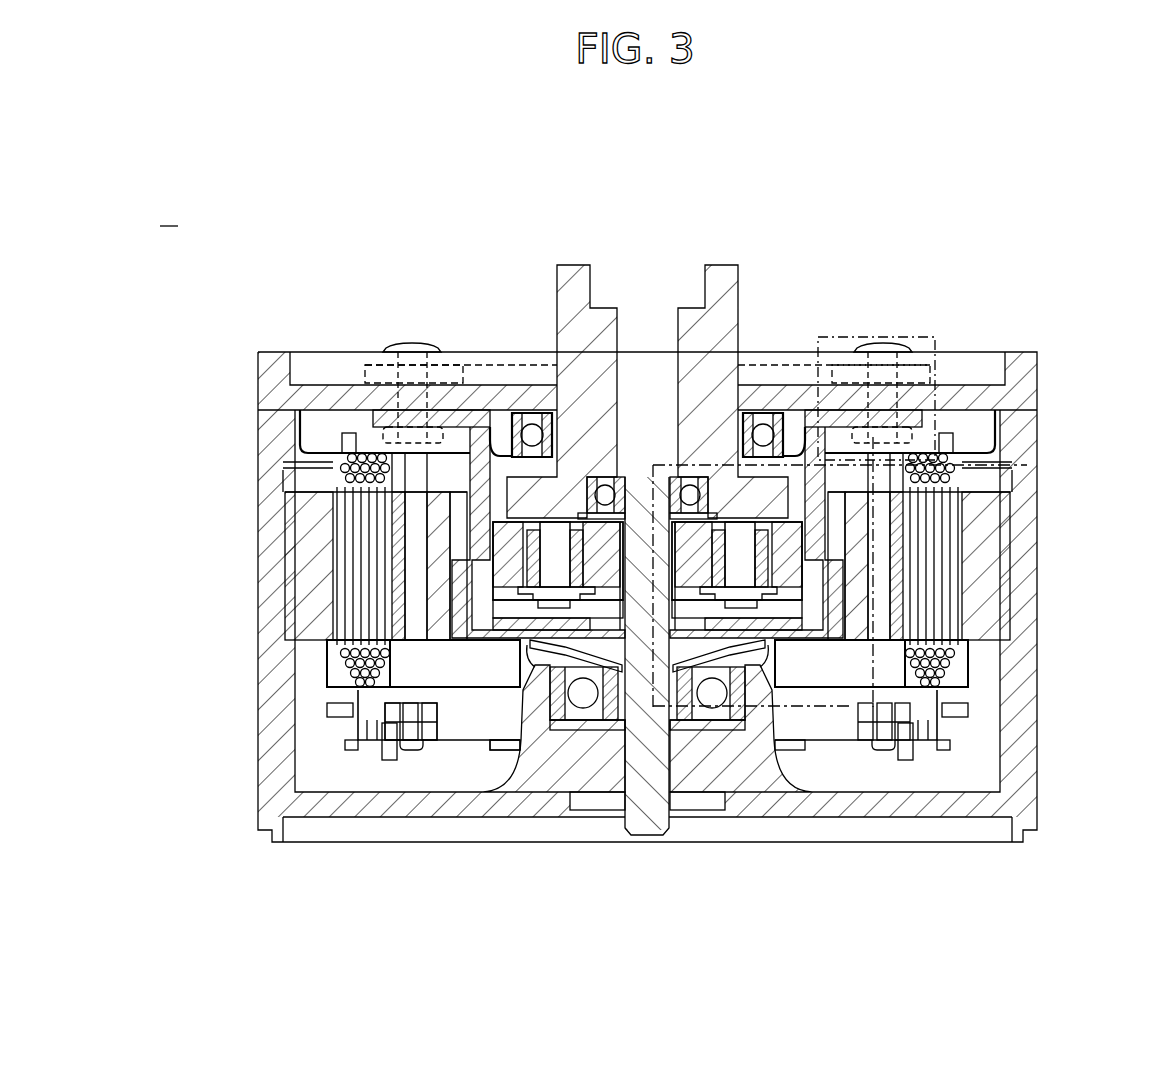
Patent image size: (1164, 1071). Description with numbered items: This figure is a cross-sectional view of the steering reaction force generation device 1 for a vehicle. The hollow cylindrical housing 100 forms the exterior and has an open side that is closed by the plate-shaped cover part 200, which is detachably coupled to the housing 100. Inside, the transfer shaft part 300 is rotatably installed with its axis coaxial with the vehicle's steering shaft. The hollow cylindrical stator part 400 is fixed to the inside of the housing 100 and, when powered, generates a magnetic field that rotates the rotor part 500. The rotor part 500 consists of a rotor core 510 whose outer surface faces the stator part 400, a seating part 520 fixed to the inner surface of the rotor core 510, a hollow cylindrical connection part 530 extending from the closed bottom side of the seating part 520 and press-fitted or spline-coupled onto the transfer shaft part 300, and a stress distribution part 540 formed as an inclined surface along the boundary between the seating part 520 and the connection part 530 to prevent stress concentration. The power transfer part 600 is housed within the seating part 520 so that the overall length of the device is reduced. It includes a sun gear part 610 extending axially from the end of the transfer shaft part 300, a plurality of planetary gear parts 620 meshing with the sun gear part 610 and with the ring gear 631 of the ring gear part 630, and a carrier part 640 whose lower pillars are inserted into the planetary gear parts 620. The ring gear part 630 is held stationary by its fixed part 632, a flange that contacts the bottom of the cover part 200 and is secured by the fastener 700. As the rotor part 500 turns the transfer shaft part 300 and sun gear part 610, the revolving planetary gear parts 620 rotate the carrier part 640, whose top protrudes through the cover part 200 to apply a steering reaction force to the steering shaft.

The steering reaction force generation device 1 is at (169, 213).
The housing 100 is at (1018, 702).
The cover part 200 is at (960, 395).
The transfer shaft part 300 is at (648, 797).
The stator part 400 is at (355, 555).
The rotor part 500 is at (647, 797).
The rotor core 510 is at (417, 645).
The seating part 520 is at (483, 648).
The connection part 530 is at (647, 763).
The stress distribution part 540 is at (528, 650).
The power transfer part 600 is at (655, 434).
The sun gear part 610 is at (668, 540).
The planetary gear part 620 is at (787, 520).
The ring gear part 630 is at (647, 418).
The ring gear 631 is at (492, 520).
The fixed part 632 is at (443, 425).
The carrier part 640 is at (593, 330).
The fastener 700 is at (882, 342).